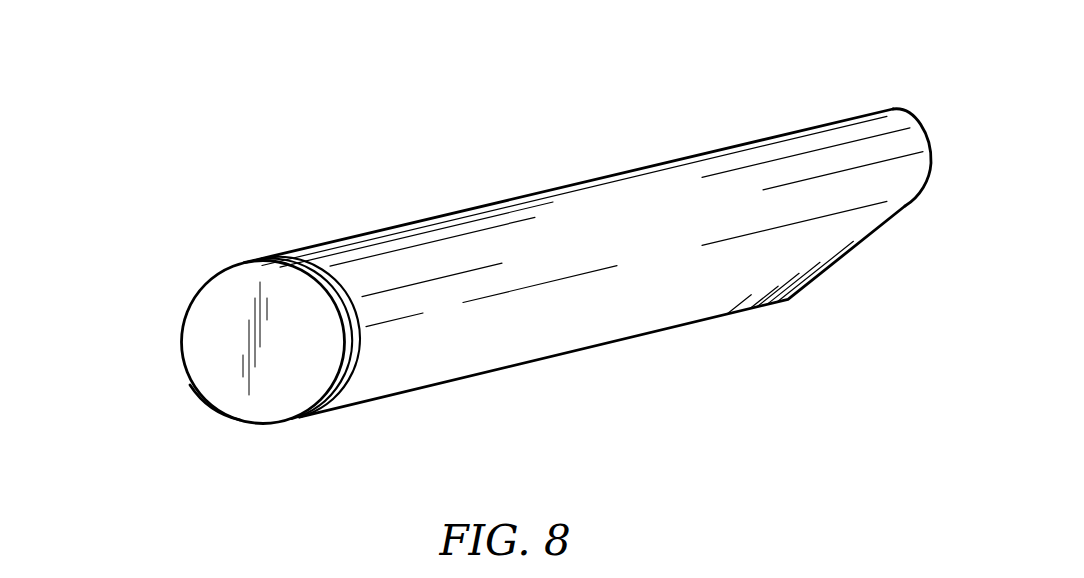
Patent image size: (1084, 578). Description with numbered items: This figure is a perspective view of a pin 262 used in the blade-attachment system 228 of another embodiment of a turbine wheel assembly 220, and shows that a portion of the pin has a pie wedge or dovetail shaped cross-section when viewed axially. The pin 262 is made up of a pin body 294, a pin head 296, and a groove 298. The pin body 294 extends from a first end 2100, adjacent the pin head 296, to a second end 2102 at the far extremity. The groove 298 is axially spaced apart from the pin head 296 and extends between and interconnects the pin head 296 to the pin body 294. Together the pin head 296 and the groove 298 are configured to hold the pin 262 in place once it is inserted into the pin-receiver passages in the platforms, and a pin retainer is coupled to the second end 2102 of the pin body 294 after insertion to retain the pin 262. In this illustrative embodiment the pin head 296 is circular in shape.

The turbine wheel assembly 220 is at (133, 125).
The blade-attachment system 228 is at (162, 210).
The pin 262 is at (213, 277).
The pin body 294 is at (543, 332).
The pin head 296 is at (207, 400).
The groove 298 is at (337, 283).
The first end 2100 is at (261, 258).
The second end 2102 is at (895, 108).